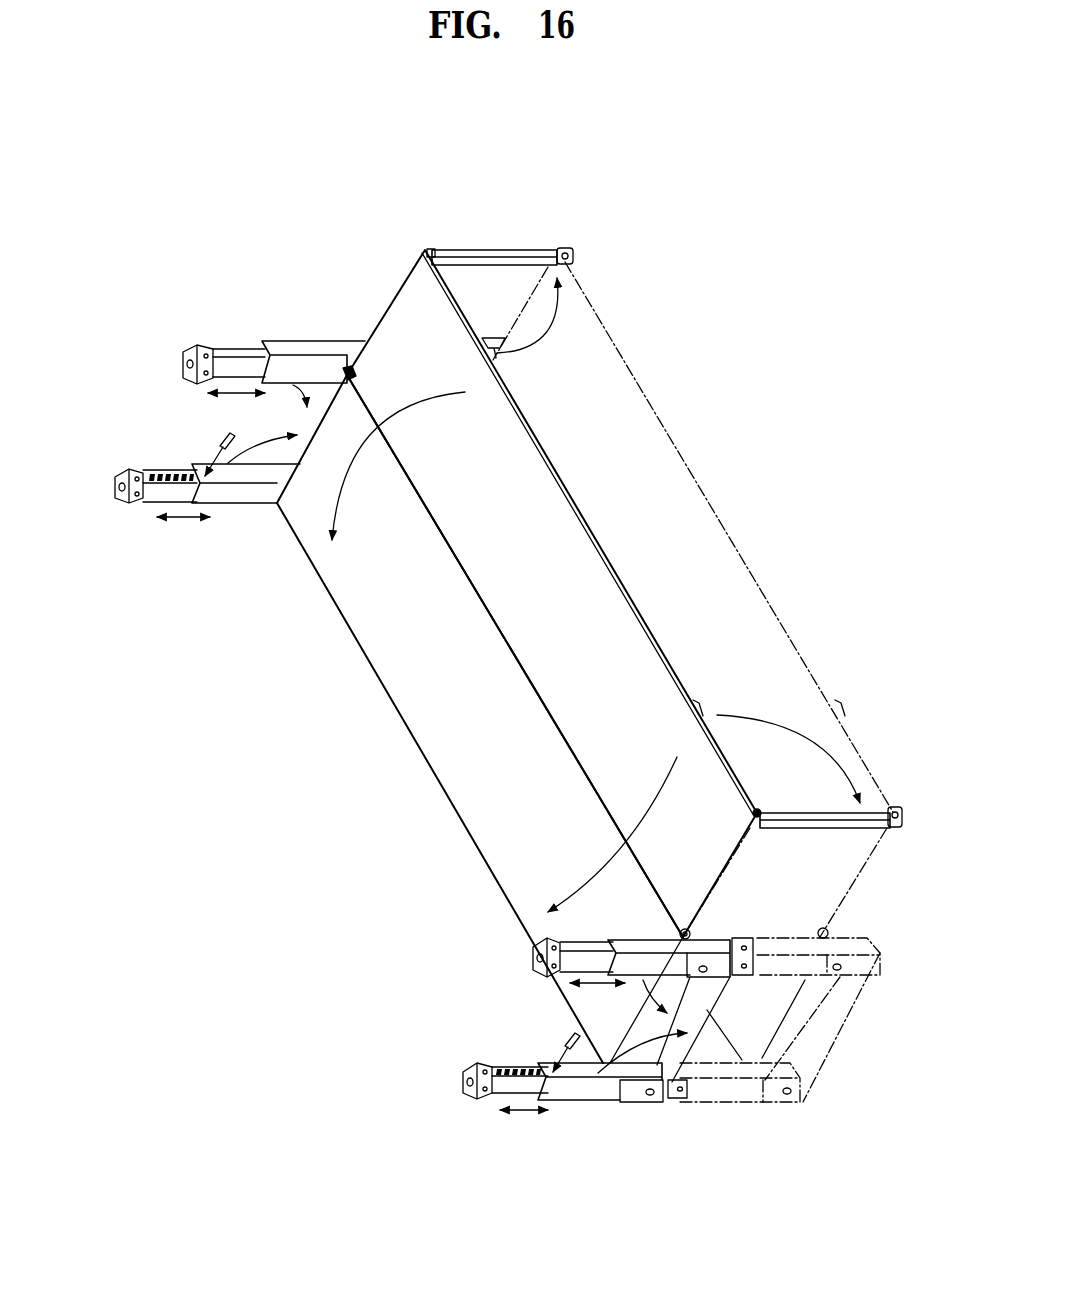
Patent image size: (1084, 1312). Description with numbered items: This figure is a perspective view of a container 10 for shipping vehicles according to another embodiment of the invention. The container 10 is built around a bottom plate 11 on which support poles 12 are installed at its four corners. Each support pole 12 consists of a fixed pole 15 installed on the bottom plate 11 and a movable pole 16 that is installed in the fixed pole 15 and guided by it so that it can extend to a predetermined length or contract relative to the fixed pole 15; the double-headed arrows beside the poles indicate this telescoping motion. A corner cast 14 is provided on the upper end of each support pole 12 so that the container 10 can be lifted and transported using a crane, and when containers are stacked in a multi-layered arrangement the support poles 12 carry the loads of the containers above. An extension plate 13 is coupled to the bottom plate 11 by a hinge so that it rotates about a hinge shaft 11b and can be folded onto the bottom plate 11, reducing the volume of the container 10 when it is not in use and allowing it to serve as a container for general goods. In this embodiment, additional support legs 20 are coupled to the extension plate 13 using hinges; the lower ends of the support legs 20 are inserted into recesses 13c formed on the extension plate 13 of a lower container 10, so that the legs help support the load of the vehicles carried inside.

The container 10 is at (295, 900).
The bottom plate 11 is at (482, 822).
The hinge shaft 11b is at (347, 380).
The support pole 12 is at (215, 566).
The extension plate 13 is at (385, 322).
The recess 13c is at (573, 264).
The corner cast 14 is at (128, 470).
The fixed pole 15 is at (216, 506).
The movable pole 16 is at (137, 505).
The additional support leg 20 is at (490, 250).